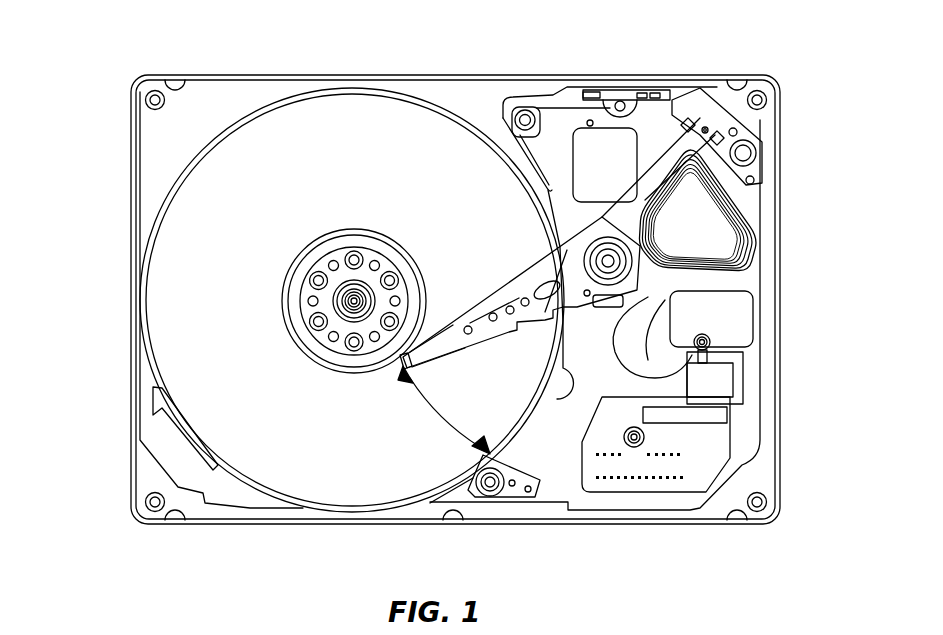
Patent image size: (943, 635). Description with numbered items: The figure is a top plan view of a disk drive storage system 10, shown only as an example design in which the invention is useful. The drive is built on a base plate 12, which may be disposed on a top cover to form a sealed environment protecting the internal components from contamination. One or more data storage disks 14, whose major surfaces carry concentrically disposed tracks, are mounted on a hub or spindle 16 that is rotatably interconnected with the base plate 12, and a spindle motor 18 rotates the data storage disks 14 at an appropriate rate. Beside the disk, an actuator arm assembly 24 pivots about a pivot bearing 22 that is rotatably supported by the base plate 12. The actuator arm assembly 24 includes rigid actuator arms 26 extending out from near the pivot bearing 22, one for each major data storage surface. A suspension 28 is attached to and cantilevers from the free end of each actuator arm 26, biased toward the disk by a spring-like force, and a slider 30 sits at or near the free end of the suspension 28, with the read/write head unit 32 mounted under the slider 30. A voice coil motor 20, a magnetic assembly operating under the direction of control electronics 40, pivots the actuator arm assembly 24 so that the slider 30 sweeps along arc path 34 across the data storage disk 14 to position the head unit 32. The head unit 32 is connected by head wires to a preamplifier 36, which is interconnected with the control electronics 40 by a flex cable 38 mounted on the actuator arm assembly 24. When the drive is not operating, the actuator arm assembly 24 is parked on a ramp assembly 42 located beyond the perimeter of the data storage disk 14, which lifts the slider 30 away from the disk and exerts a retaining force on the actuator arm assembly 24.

The disk drive storage system 10 is at (117, 137).
The base plate 12 is at (272, 75).
The data storage disk 14 is at (365, 120).
The spindle 16 is at (376, 231).
The spindle motor 18 is at (340, 283).
The voice coil motor 20 is at (708, 223).
The pivot bearing 22 is at (623, 256).
The actuator arm assembly 24 is at (541, 273).
The actuator arm 26 is at (503, 330).
The suspension 28 is at (440, 327).
The slider 30 is at (433, 366).
The head unit 32 is at (402, 362).
The arc path 34 is at (437, 418).
The preamplifier 36 is at (615, 318).
The flex cable 38 is at (683, 392).
The control electronics 40 is at (643, 487).
The ramp assembly 42 is at (517, 495).